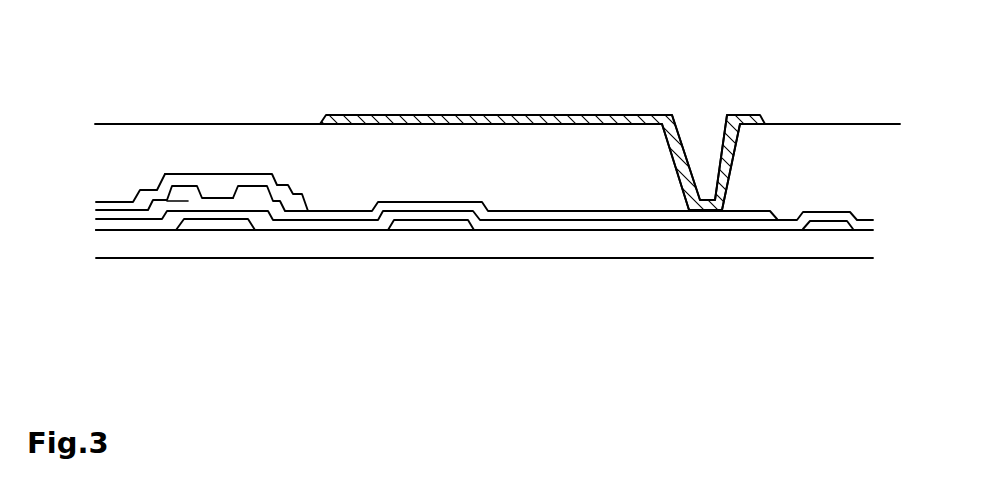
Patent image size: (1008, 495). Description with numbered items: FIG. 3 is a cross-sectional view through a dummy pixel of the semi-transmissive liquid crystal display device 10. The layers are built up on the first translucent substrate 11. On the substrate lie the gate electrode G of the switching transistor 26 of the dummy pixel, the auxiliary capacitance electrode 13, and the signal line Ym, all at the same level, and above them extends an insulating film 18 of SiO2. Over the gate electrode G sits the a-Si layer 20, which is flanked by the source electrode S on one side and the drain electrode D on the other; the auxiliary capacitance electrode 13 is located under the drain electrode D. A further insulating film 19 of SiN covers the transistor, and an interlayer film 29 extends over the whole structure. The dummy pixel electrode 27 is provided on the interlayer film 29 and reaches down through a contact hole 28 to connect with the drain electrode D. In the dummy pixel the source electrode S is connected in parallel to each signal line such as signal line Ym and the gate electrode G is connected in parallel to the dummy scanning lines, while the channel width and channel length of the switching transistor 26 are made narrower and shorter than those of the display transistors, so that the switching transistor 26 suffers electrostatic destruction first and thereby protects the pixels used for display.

The semi-transmissive liquid crystal display device 10 is at (116, 42).
The first translucent substrate 11 is at (622, 248).
The auxiliary capacitance electrode 13 is at (435, 226).
The insulating film 18 is at (850, 212).
The insulating film 19 is at (113, 203).
The a-Si layer 20 is at (165, 200).
The switching transistor of the dummy pixel 26 is at (189, 242).
The dummy pixel electrode 27 is at (353, 115).
The contact hole 28 is at (703, 174).
The interlayer film 29 is at (636, 157).
The gate electrode G is at (209, 225).
The source electrode S is at (118, 215).
The drain electrode D is at (329, 214).
The signal line Ym is at (828, 228).